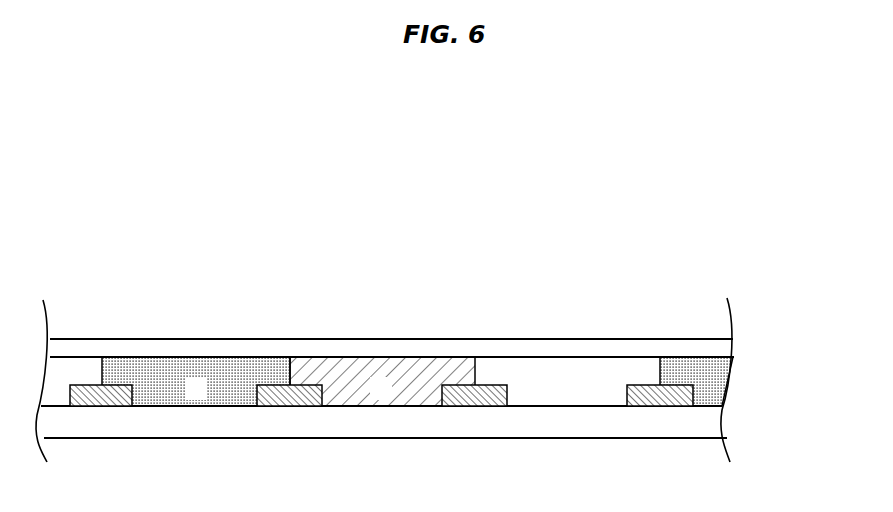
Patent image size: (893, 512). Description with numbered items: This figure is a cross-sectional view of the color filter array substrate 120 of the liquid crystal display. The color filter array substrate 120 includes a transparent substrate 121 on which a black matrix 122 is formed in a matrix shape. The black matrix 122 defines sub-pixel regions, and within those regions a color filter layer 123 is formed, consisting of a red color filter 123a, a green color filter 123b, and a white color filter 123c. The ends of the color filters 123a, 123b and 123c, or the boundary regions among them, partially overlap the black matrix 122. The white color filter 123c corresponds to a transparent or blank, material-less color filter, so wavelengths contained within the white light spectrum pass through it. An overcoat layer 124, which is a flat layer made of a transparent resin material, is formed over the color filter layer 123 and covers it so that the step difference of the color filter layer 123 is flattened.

The color filter array substrate 120 is at (113, 133).
The transparent substrate 121 is at (713, 425).
The black matrix 122 is at (688, 388).
The color filter layer 123 is at (572, 233).
The red color filter 123a is at (195, 365).
The green color filter 123b is at (380, 363).
The white color filter 123c is at (571, 365).
The overcoat layer 124 is at (723, 347).